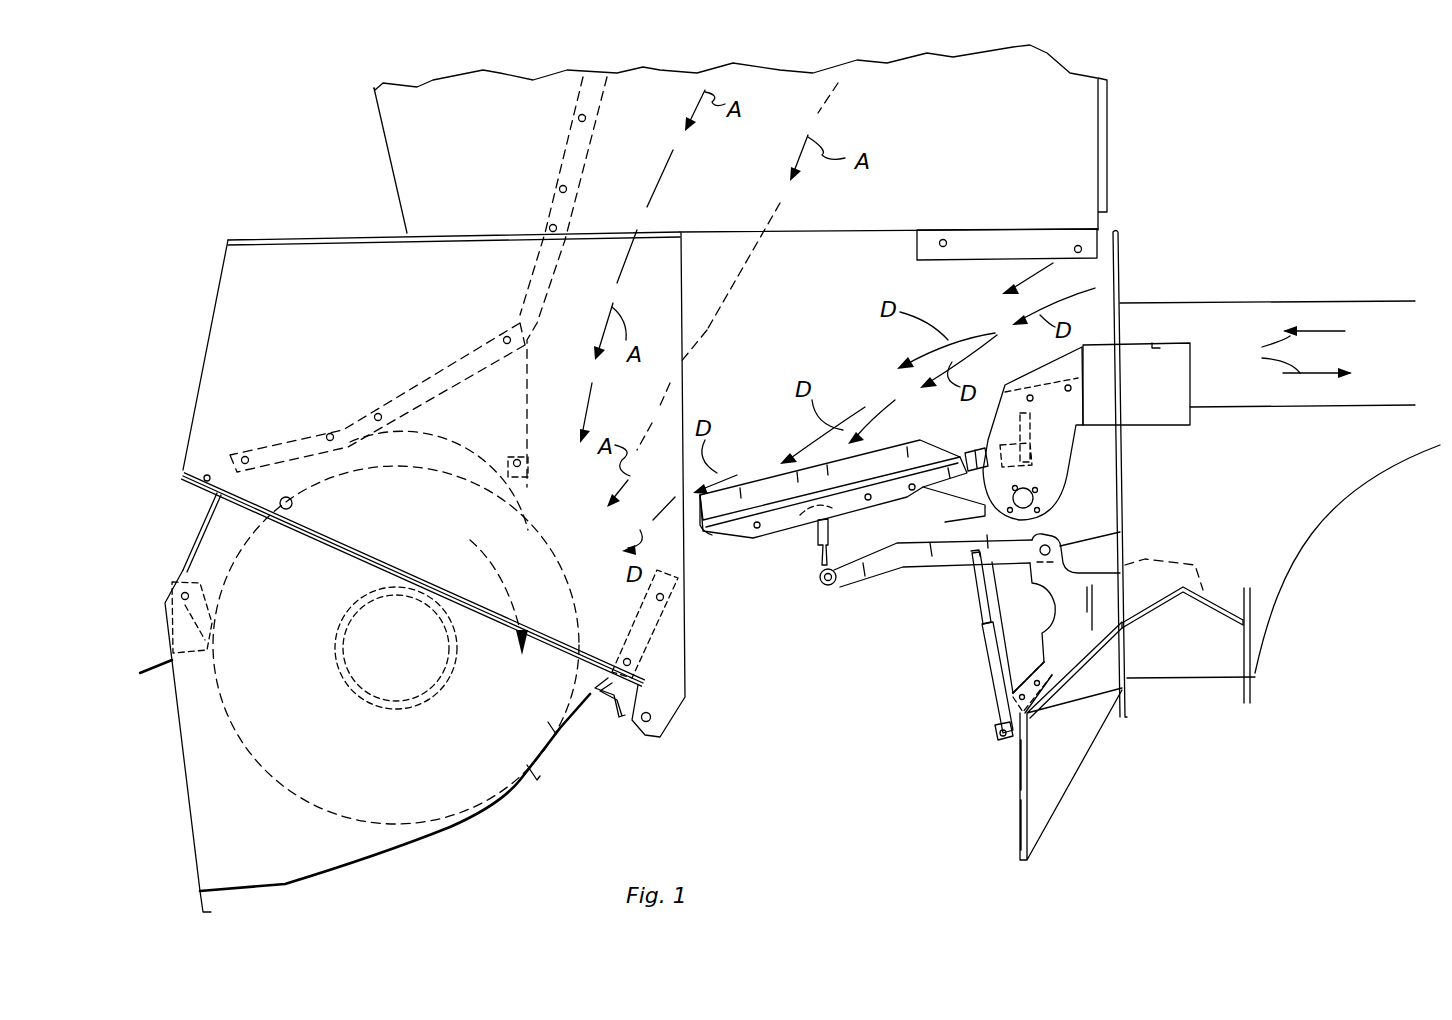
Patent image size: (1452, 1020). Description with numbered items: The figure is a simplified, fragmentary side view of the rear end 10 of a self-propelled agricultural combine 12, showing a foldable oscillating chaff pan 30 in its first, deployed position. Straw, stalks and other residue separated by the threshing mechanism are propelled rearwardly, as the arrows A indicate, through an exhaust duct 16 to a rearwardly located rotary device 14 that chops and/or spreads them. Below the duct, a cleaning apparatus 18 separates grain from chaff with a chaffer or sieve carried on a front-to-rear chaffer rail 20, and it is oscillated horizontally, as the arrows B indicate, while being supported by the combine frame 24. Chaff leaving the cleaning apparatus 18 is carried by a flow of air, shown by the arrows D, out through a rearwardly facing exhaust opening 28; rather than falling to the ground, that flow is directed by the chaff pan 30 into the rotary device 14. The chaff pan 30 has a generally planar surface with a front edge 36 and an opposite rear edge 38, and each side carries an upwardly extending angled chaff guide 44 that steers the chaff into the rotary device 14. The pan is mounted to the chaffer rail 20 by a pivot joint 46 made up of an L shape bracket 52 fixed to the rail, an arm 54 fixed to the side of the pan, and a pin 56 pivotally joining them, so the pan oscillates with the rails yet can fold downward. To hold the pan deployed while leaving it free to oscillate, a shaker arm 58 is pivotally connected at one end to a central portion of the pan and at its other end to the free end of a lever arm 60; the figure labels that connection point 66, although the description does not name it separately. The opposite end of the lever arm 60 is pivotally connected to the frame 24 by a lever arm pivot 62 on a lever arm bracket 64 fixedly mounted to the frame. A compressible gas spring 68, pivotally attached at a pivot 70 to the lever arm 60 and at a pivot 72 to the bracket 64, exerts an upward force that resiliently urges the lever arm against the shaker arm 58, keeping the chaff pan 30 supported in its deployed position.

The rear end 10 is at (1187, 680).
The self-propelled agricultural combine 12 is at (1362, 600).
The rotary device 14 is at (557, 733).
The exhaust duct 16 is at (395, 212).
The cleaning apparatus 18 is at (1330, 298).
The chaffer rail 20 is at (1225, 303).
The combine frame 24 is at (1248, 642).
The exhaust opening 28 is at (1107, 277).
The chaff pan 30 is at (762, 592).
The front edge 36 is at (960, 447).
The rear edge 38 is at (702, 522).
The angled chaff guide 44 is at (760, 477).
The pivot joint 46 is at (1035, 503).
The L shape bracket 52 is at (1073, 443).
The arm 54 is at (980, 517).
The pin 56 is at (1053, 487).
The shaker arm 58 is at (829, 530).
The lever arm 60 is at (900, 577).
The lever arm pivot 62 is at (1050, 550).
The lever arm bracket 64 is at (1040, 627).
The link pivot 66 is at (820, 583).
The gas spring 68 is at (983, 655).
The pivot 70 is at (980, 562).
The pivot 72 is at (1000, 733).